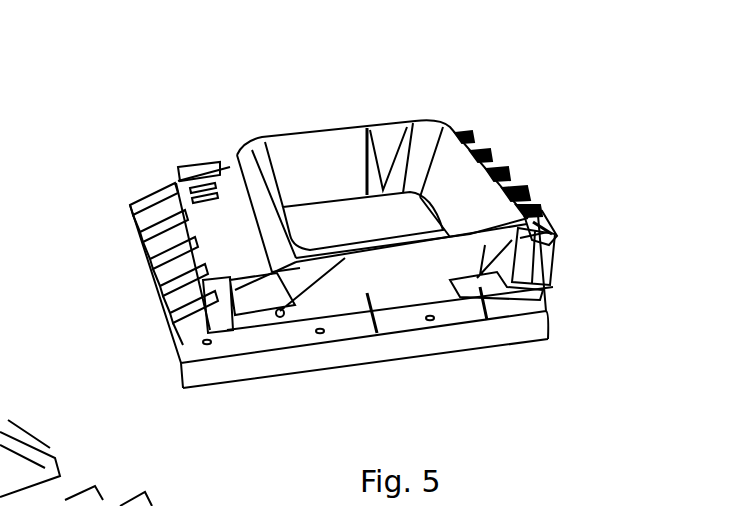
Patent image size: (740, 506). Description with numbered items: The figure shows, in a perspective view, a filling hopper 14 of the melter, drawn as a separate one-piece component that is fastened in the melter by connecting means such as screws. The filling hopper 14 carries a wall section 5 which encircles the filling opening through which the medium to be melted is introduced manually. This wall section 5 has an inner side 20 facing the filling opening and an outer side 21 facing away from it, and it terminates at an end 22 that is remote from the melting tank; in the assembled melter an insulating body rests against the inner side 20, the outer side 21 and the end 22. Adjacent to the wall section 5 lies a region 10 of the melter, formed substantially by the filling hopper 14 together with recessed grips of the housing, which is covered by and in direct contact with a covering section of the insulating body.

The wall section 5 is at (305, 111).
The region 10 is at (225, 227).
The filling hopper 14 is at (113, 273).
The inner side 20 is at (330, 162).
The outer side 21 is at (407, 267).
The end 22 is at (367, 129).